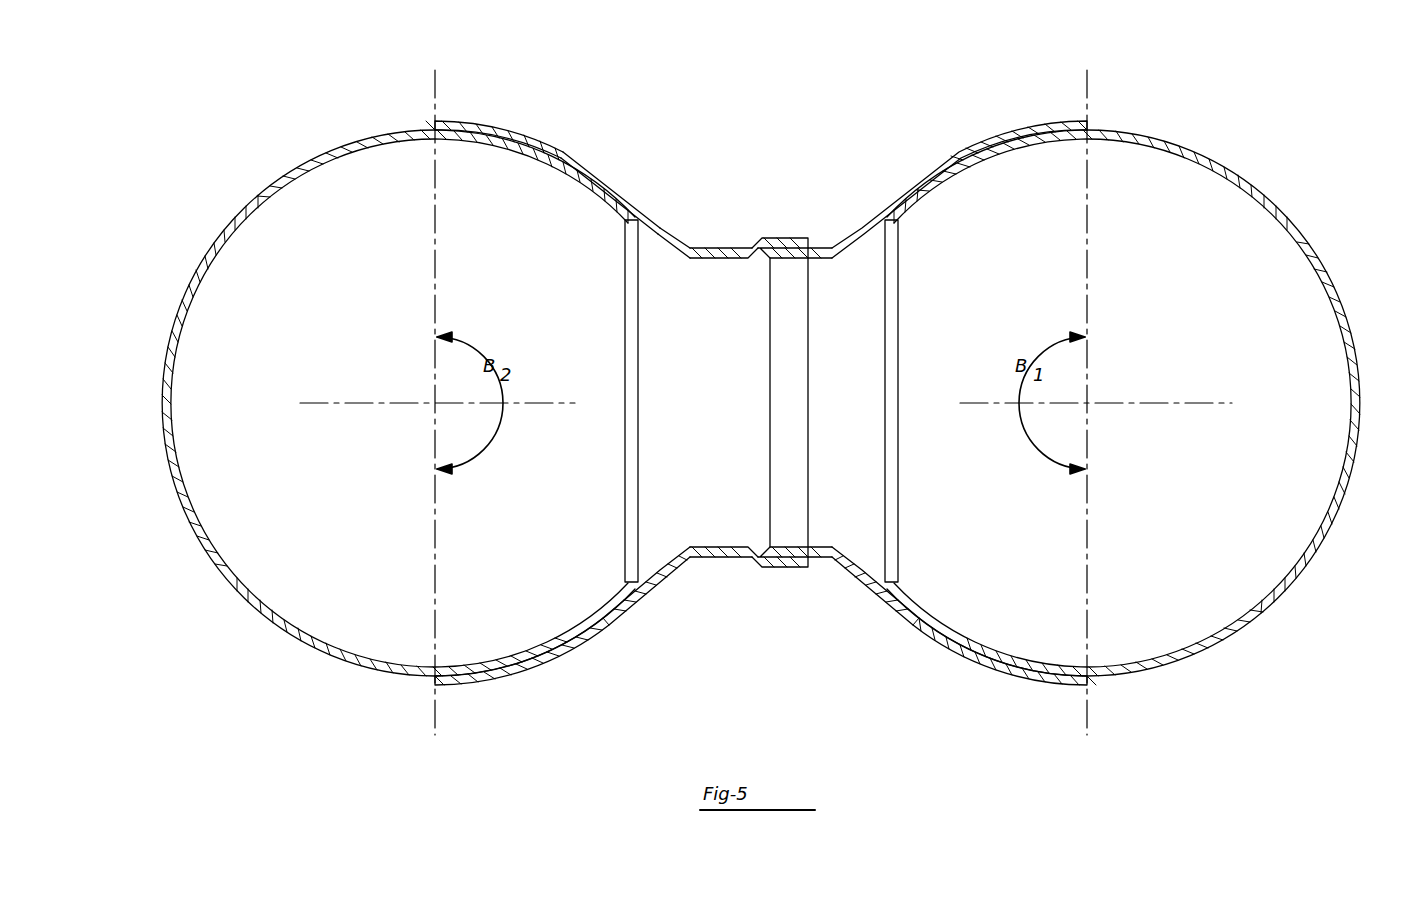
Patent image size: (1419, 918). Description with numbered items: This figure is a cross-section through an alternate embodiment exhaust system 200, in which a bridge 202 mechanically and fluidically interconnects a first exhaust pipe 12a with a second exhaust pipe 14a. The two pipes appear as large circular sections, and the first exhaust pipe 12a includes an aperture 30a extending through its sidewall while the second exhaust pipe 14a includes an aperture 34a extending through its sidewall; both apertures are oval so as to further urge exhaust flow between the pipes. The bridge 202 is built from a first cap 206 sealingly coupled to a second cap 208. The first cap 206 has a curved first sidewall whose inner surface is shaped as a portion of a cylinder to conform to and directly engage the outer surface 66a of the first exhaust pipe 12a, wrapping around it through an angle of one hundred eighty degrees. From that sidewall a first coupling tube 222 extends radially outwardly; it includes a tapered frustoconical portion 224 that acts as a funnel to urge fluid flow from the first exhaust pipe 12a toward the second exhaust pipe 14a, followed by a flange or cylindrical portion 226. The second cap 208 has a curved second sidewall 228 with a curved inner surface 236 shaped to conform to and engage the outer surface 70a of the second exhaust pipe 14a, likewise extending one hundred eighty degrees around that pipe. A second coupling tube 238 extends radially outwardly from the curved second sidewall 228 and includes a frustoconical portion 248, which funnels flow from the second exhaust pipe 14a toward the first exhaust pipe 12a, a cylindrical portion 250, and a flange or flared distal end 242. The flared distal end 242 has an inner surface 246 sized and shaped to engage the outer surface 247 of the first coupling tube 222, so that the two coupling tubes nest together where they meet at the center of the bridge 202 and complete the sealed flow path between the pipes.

The exhaust system 200 is at (1166, 718).
The bridge 202 is at (691, 570).
The first exhaust pipe 12a is at (1363, 400).
The second exhaust pipe 14a is at (164, 397).
The outer surface 66a is at (1186, 148).
The outer surface 70a is at (265, 196).
The aperture 30a is at (625, 244).
The aperture 34a is at (898, 244).
The first cap 206 is at (958, 151).
The second cap 208 is at (601, 168).
The curved second sidewall 228 is at (492, 126).
The curved inner surface 236 is at (545, 165).
The second coupling tube 238 is at (702, 246).
The flared distal end 242 is at (792, 238).
The outer surface 247 is at (821, 243).
The first coupling tube 222 is at (812, 257).
The inner surface 246 is at (797, 258).
The frustoconical portion 248 is at (672, 252).
The cylindrical portion 250 is at (737, 258).
The cylindrical portion 226 is at (812, 546).
The frustoconical portion 224 is at (853, 549).